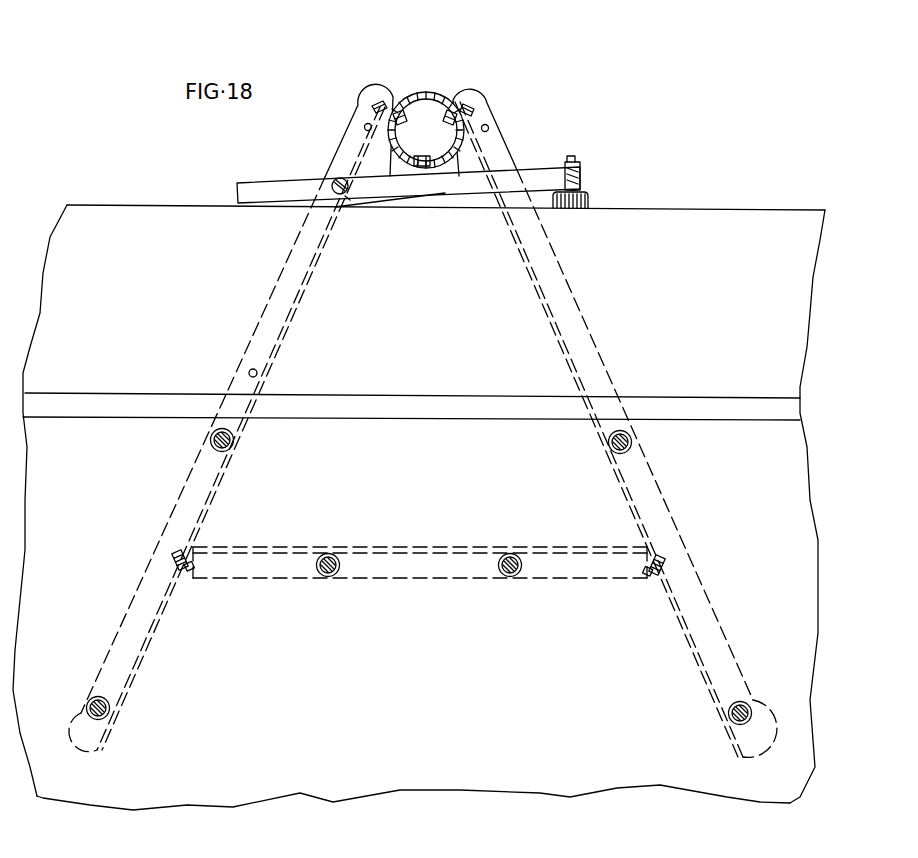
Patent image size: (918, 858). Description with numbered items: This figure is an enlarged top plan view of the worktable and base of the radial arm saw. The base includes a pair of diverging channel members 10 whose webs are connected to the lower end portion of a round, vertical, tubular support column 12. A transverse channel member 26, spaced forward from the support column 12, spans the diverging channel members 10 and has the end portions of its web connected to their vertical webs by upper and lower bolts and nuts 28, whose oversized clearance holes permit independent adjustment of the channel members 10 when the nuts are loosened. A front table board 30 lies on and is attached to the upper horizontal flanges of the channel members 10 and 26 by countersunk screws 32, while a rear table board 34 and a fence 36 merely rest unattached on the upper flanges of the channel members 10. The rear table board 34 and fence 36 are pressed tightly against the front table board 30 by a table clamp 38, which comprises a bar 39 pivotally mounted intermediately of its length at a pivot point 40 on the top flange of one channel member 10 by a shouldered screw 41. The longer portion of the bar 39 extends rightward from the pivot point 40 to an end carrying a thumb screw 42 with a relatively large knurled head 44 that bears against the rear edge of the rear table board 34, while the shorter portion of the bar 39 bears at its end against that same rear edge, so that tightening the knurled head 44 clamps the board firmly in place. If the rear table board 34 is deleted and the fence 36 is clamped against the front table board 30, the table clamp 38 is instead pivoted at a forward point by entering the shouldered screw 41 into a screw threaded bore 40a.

The diverging channel members 10 is at (347, 133).
The tubular support column 12 is at (430, 92).
The transverse channel member 26 is at (395, 548).
The bolts and nuts 28 is at (195, 572).
The front table board 30 is at (192, 803).
The countersunk screws 32 is at (609, 447).
The rear table board 34 is at (197, 208).
The fence 36 is at (163, 367).
The table clamp 38 is at (270, 178).
The bar 39 is at (443, 190).
The pivot point 40 is at (336, 180).
The screw threaded bore 40a is at (257, 373).
The shouldered screw 41 is at (345, 196).
The thumb screw 42 is at (575, 162).
The knurled head 44 is at (588, 196).